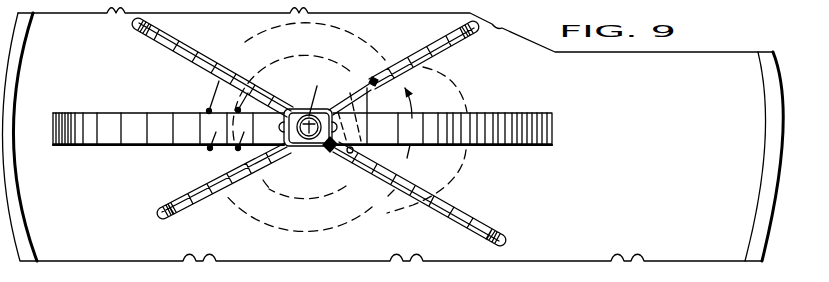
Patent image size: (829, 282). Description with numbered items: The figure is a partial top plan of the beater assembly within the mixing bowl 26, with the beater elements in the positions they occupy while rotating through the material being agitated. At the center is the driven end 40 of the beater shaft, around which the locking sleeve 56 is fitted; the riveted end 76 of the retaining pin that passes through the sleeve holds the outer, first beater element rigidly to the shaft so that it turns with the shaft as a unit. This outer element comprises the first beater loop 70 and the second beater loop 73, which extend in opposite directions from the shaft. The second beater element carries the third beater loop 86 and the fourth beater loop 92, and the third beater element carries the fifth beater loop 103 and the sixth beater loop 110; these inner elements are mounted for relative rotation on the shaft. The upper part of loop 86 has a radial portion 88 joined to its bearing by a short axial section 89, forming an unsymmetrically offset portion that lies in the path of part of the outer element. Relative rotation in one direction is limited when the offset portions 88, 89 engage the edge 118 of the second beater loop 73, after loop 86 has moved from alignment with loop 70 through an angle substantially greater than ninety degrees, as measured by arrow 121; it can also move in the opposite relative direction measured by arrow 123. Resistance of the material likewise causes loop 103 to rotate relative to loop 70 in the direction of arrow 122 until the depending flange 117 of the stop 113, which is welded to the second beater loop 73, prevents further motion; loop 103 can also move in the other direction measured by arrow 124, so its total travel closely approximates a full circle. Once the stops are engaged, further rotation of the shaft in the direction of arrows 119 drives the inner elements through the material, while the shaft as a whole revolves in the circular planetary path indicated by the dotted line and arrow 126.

The mixing bowl 26 is at (31, 245).
The driven end 40 is at (313, 147).
The locking sleeve 56 is at (208, 110).
The first beater loop 70 is at (59, 149).
The second beater loop 73 is at (505, 111).
The riveted end of retaining pin 76 is at (222, 151).
The third beater loop 86 is at (489, 241).
The radial portion 88 is at (395, 189).
The short axial section 89 is at (362, 181).
The fourth beater loop 92 is at (171, 50).
The fifth beater loop 103 is at (452, 52).
The sixth beater loop 110 is at (184, 209).
The stop 113 is at (367, 101).
The depending flange 117 is at (391, 61).
The edge of second beater loop 118 is at (365, 152).
The direction of shaft rotation arrows 119 is at (85, 112).
The arrow of relative counterclockwise rotation of loop 86 121 is at (250, 176).
The arrow of relative rotation of loop 103 122 is at (262, 231).
The arrow of relative clockwise rotation of loop 86 123 is at (268, 64).
The arrow of further relative rotation of loop 103 124 is at (237, 54).
The planetary path arrow 126 is at (452, 181).